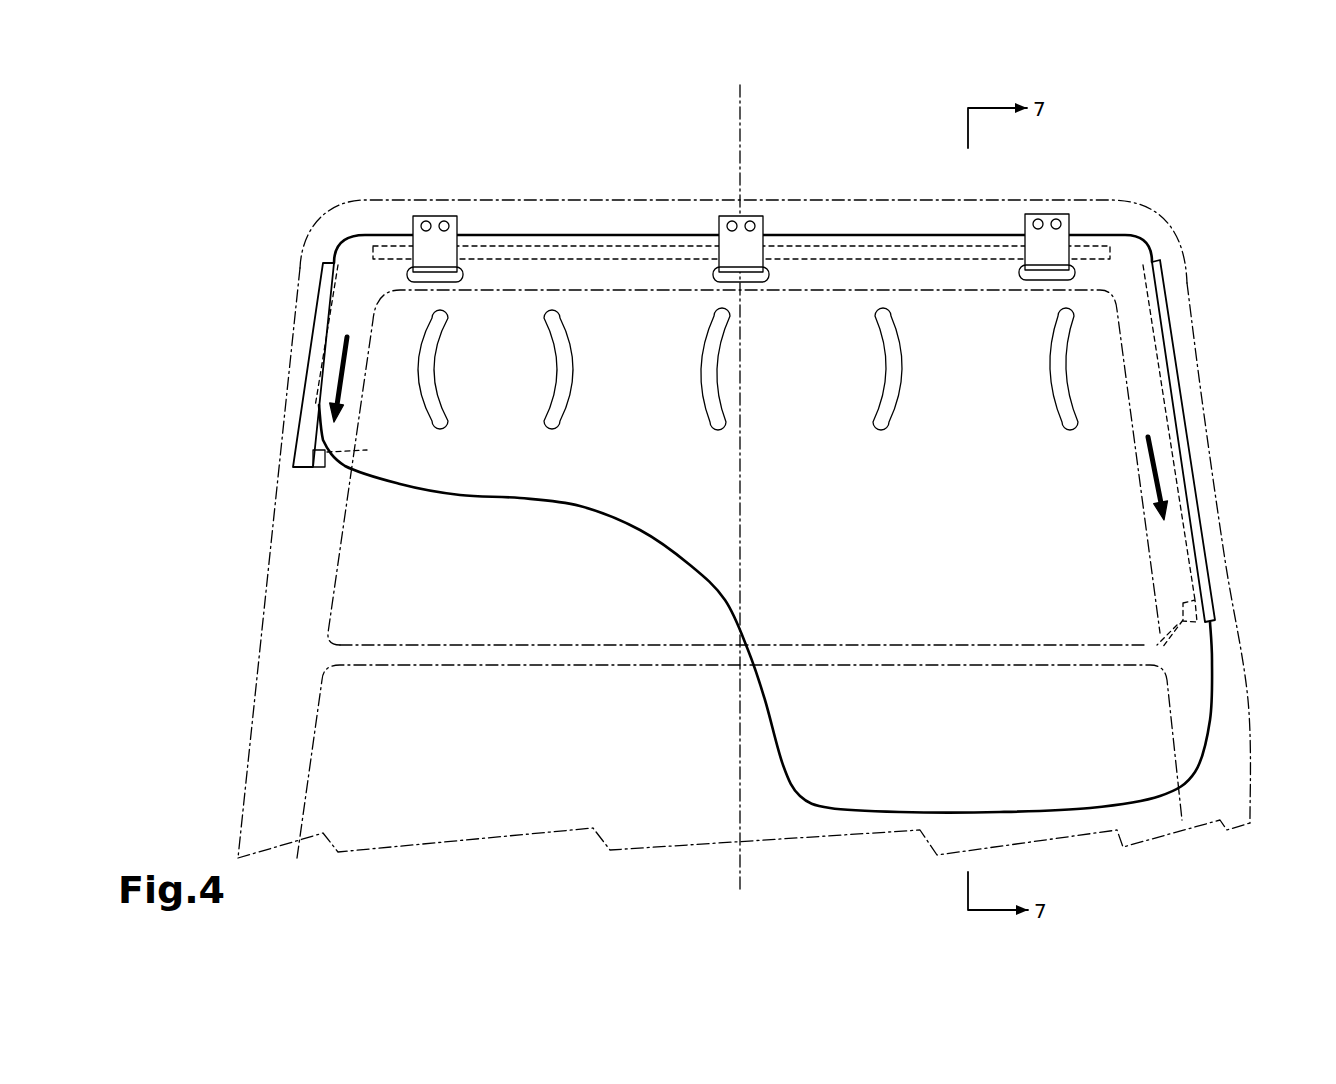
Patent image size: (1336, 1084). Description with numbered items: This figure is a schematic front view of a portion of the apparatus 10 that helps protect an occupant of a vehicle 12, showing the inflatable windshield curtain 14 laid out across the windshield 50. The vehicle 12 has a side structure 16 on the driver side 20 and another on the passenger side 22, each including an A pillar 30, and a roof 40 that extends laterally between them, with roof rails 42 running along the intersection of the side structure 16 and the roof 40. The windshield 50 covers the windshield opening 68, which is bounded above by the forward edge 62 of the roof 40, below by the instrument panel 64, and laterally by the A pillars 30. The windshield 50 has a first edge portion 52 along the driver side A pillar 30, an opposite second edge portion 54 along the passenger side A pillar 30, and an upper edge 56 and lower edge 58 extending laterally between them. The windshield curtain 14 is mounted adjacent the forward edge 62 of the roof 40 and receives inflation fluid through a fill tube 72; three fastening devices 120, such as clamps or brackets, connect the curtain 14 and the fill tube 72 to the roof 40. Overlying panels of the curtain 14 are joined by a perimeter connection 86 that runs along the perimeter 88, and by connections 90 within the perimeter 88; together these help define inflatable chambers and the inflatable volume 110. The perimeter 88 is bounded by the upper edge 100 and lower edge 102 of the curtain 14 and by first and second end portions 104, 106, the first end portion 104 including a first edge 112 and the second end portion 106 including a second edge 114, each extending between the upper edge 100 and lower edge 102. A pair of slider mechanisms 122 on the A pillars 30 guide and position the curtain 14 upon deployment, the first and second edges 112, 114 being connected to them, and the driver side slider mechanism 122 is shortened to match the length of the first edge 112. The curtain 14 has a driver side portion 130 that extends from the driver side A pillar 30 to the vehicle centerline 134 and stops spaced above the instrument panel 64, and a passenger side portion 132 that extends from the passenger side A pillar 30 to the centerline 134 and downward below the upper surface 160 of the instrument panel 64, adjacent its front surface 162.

The apparatus 10 is at (497, 150).
The vehicle 12 is at (553, 163).
The inflatable windshield curtain 14 is at (788, 610).
The side structure 16 is at (287, 550).
The driver side 20 is at (498, 852).
The passenger side 22 is at (897, 847).
The A pillar 30 is at (287, 393).
The roof 40 is at (853, 217).
The roof rails 42 is at (353, 223).
The windshield 50 is at (515, 585).
The first edge portion 52 is at (340, 548).
The second edge portion 54 is at (1135, 465).
The upper edge 56 is at (573, 288).
The lower edge 58 is at (575, 643).
The forward edge 62 is at (643, 283).
The instrument panel 64 is at (635, 772).
The windshield opening 68 is at (780, 317).
The fill tube 72 is at (600, 257).
The perimeter connection 86 is at (812, 805).
The perimeter 88 is at (842, 810).
The connections 90 is at (430, 365).
The upper edge 100 is at (642, 240).
The lower edge 102 is at (723, 595).
The first end portion 104 is at (335, 297).
The second end portion 106 is at (1143, 387).
The inflatable volume 110 is at (923, 343).
The first edge 112 is at (357, 320).
The second edge 114 is at (1177, 403).
The fastening devices 120 is at (430, 227).
The slider mechanisms 122 is at (315, 338).
The driver side portion 130 is at (467, 473).
The passenger side portion 132 is at (1045, 778).
The vehicle centerline 134 is at (742, 122).
The upper surface 160 is at (940, 668).
The front surface 162 is at (1108, 752).